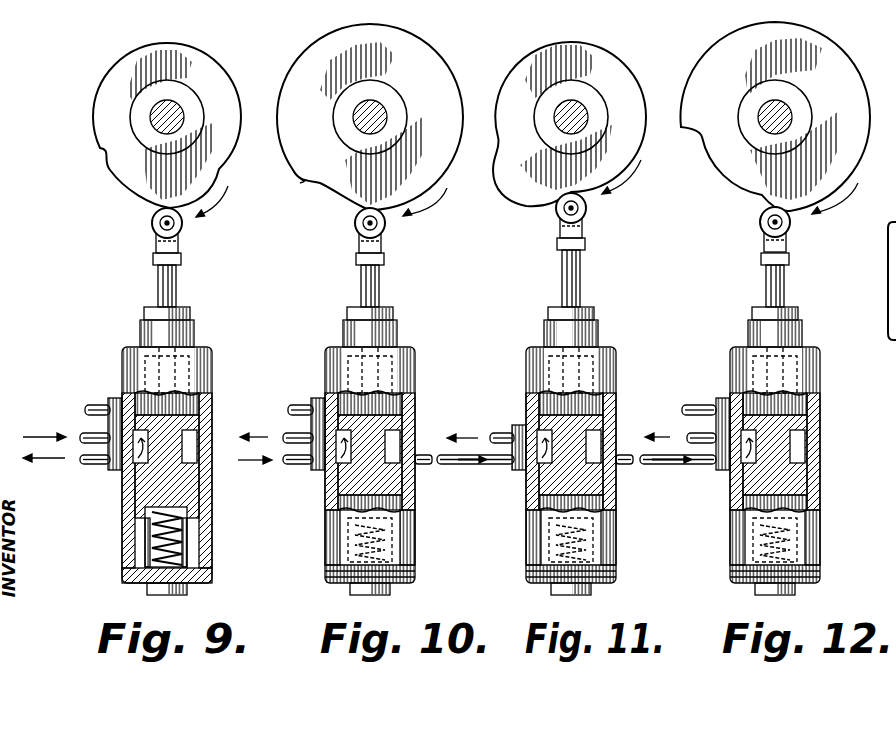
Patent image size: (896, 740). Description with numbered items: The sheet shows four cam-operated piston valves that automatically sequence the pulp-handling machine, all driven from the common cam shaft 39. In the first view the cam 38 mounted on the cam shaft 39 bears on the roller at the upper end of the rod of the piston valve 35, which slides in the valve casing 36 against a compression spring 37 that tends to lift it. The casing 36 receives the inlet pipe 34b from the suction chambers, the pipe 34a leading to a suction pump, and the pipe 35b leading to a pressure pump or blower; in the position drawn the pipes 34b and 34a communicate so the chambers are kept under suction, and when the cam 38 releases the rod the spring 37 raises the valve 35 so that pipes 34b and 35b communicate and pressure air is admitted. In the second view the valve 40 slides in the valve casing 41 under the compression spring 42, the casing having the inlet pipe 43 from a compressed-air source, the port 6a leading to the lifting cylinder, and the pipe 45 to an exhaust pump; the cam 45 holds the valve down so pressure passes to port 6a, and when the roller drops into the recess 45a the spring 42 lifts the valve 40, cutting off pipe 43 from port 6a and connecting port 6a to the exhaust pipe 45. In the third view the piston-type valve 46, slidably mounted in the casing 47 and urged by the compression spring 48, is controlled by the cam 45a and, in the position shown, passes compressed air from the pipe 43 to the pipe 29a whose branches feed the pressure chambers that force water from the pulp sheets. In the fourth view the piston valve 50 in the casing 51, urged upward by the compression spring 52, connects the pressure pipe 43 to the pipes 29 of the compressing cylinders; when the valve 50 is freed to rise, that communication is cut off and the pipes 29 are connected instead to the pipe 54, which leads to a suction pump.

In FIG. 9, the cam 38 is at (100, 91).
In FIG. 9, the cam shaft 39 is at (151, 119).
In FIG. 10, the cam shaft 39 is at (353, 118).
In FIG. 11, the cam shaft 39 is at (556, 109).
In FIG. 12, the cam shaft 39 is at (758, 106).
In FIG. 9, the pipe 35b is at (100, 404).
In FIG. 9, the inlet pipe 34b is at (80, 435).
In FIG. 9, the pipe 34a is at (100, 466).
In FIG. 9, the piston valve 35 is at (145, 488).
In FIG. 9, the valve casing 36 is at (200, 522).
In FIG. 9, the compression spring 37 is at (165, 546).
In FIG. 10, the cam 45 is at (448, 82).
In FIG. 12, the cam 45 is at (832, 48).
In FIG. 10, the recess 45a is at (338, 190).
In FIG. 11, the recess 45a is at (606, 57).
In FIG. 10, the port 6a is at (284, 433).
In FIG. 10, the inlet pipe 43 is at (300, 466).
In FIG. 11, the inlet pipe 43 is at (505, 466).
In FIG. 12, the inlet pipe 43 is at (710, 466).
In FIG. 10, the valve 40 is at (372, 497).
In FIG. 10, the valve casing 41 is at (414, 530).
In FIG. 10, the compression spring 42 is at (385, 549).
In FIG. 11, the pipe 29a is at (490, 438).
In FIG. 11, the valve 46 is at (580, 488).
In FIG. 11, the casing 47 is at (613, 520).
In FIG. 11, the compression spring 48 is at (582, 542).
In FIG. 12, the pipe 54 is at (708, 398).
In FIG. 12, the pipes 29 is at (688, 437).
In FIG. 12, the piston valve 50 is at (792, 478).
In FIG. 12, the casing 51 is at (822, 499).
In FIG. 12, the compression spring 52 is at (792, 544).